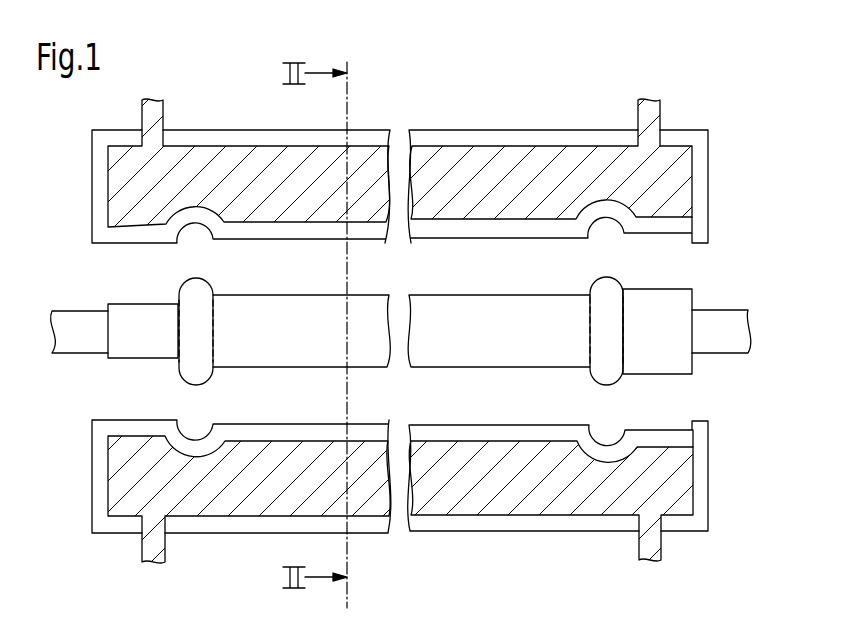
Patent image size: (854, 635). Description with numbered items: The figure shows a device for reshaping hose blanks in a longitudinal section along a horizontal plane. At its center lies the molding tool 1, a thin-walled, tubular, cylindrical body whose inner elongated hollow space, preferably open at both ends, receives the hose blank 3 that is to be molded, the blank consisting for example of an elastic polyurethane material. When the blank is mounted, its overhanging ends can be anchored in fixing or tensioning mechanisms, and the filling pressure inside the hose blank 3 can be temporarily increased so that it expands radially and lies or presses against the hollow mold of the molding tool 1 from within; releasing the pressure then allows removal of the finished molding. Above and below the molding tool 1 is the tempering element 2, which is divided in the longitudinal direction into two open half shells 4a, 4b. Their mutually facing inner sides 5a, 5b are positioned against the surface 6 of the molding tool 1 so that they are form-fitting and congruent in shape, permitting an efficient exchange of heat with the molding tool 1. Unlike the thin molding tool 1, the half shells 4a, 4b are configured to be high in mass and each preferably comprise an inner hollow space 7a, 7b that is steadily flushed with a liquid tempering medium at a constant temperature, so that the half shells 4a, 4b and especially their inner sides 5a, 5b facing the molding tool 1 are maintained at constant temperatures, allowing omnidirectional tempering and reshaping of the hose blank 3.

The molding tool 1 is at (660, 298).
The tempering element 2 is at (688, 130).
The hose blank 3 is at (722, 337).
The half shell 4a is at (374, 174).
The half shell 4b is at (374, 491).
The inner side 5a is at (128, 243).
The inner side 5b is at (130, 420).
The surface 6 is at (510, 297).
The inner hollow space 7a is at (217, 178).
The inner hollow space 7b is at (502, 490).